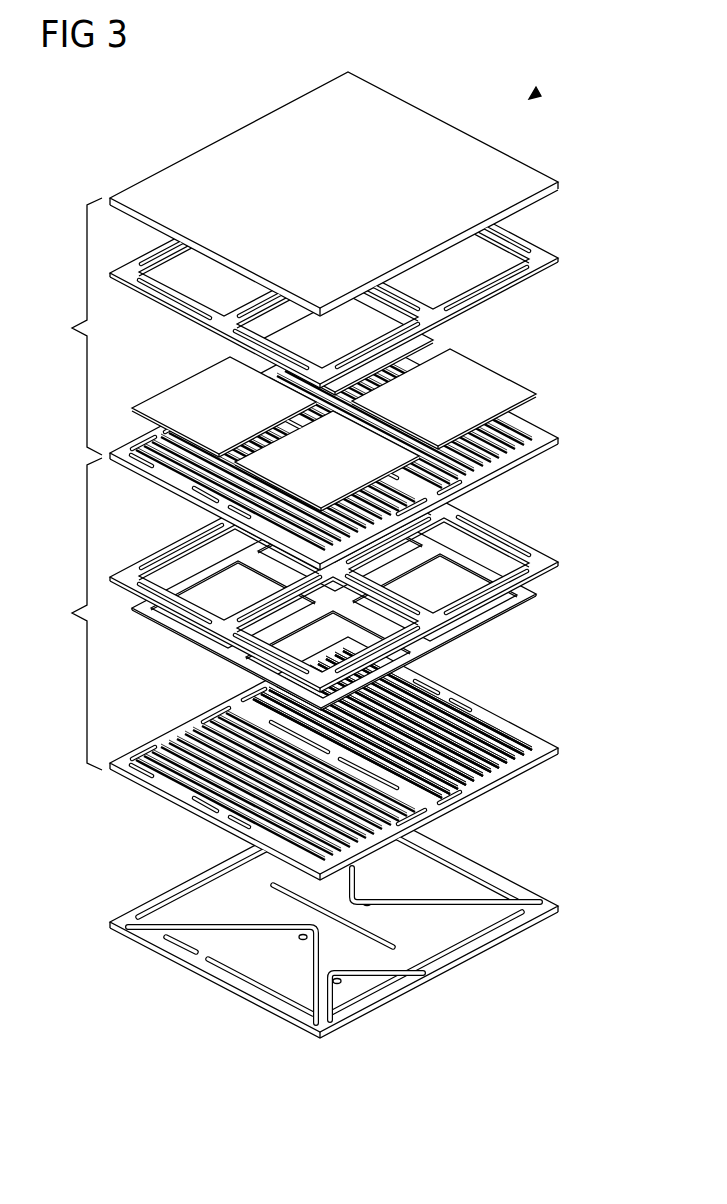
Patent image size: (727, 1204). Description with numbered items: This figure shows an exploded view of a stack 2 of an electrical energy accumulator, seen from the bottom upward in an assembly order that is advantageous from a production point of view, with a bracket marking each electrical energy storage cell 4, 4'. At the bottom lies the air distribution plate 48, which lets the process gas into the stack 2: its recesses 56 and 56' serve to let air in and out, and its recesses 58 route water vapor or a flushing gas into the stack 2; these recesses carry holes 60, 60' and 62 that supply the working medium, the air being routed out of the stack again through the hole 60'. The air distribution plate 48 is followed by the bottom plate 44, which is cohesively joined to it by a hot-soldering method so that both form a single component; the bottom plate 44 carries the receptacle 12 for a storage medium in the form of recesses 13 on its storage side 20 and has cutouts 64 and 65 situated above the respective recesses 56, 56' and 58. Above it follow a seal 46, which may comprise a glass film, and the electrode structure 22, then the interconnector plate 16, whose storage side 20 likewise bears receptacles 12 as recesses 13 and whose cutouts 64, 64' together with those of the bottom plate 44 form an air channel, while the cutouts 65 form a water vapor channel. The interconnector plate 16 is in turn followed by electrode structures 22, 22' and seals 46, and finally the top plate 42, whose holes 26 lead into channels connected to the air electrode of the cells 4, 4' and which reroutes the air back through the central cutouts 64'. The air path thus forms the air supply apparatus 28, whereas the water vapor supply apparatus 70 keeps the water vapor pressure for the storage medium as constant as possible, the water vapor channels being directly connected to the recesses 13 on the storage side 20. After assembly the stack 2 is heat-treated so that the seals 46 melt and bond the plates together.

The stack 2 is at (540, 93).
The storage cell 4 is at (77, 326).
The storage cell 4' is at (75, 614).
The receptacle 12 is at (477, 732).
The recess 13 is at (392, 723).
The interconnector plate 16 is at (555, 432).
The storage side 20 is at (498, 455).
The electrode structure 22 is at (371, 602).
The electrode structure 22' is at (345, 403).
The hole 26 is at (155, 463).
The air supply apparatus 28 is at (187, 483).
The top plate 42 is at (443, 130).
The bottom plate 44 is at (548, 748).
The seal 46 is at (548, 258).
The air distribution plate 48 is at (552, 905).
The recess 56 is at (340, 915).
The recess 56' is at (440, 935).
The recess 58 is at (385, 983).
The hole 60 is at (309, 918).
The hole 60' is at (472, 912).
The hole 62 is at (333, 1012).
The cutout 64 is at (114, 638).
The cutout 64' is at (462, 630).
The cutout 65 is at (140, 437).
The water vapor supply apparatus 70 is at (337, 982).